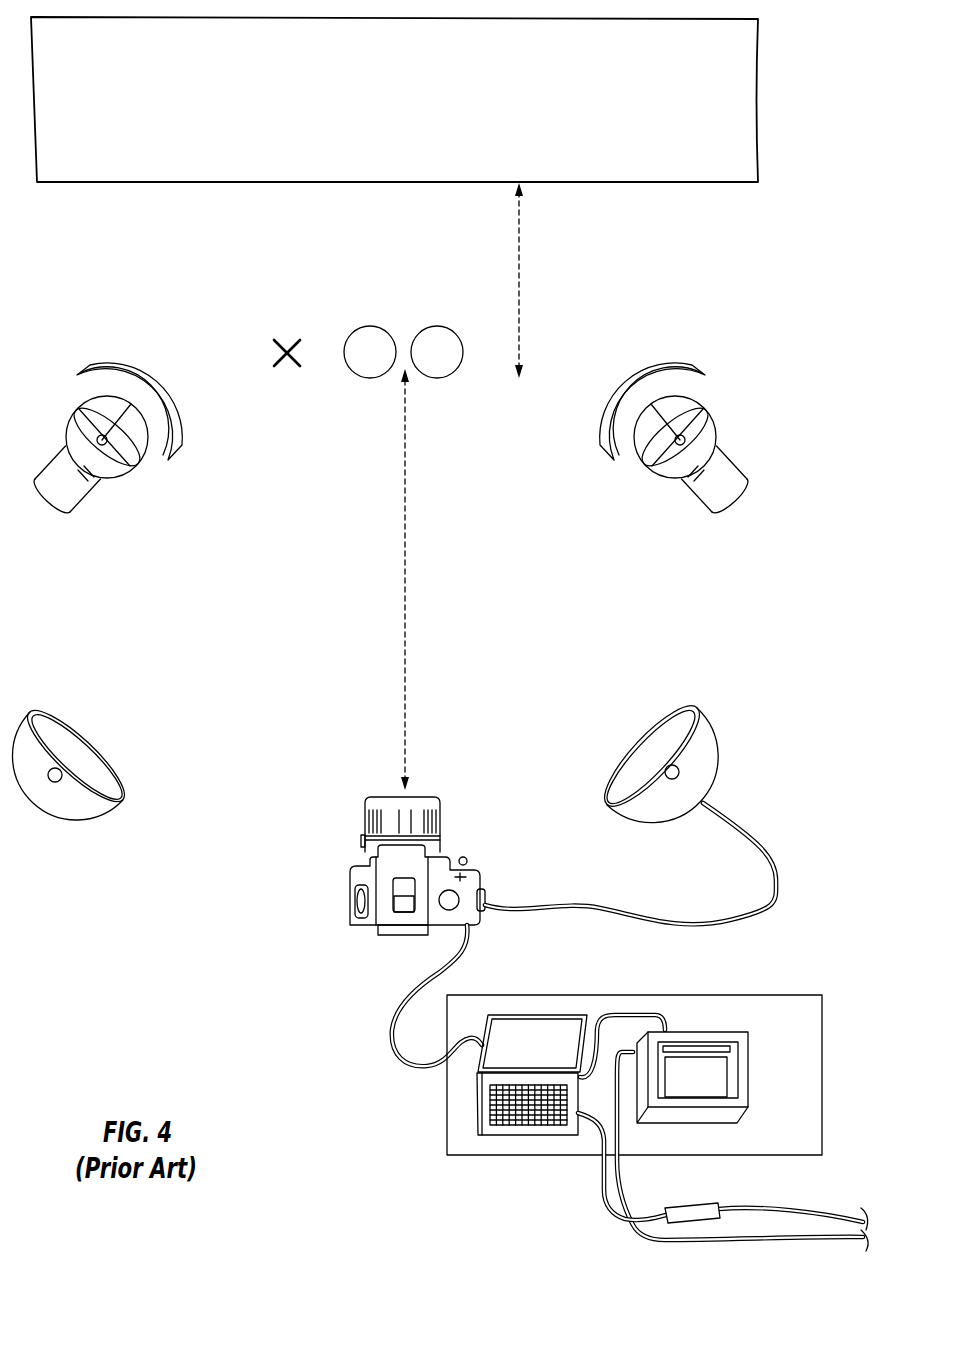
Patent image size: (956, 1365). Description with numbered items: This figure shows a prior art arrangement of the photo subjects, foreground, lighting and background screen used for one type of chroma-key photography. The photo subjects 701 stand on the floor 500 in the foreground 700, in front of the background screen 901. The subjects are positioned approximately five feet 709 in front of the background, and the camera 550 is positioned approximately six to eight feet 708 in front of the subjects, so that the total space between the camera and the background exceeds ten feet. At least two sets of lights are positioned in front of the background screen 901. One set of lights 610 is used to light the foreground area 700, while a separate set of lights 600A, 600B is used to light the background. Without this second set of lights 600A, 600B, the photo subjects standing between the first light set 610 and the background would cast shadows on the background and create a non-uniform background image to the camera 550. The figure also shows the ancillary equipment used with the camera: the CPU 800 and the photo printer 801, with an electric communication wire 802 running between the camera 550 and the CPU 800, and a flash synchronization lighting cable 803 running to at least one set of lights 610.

The floor 500 is at (218, 256).
The background screen 901 is at (705, 183).
The distance of approximately five feet 709 is at (520, 290).
The foreground 700 is at (276, 357).
The photo subjects 701 is at (367, 396).
The distance of approximately six to eight feet 708 is at (407, 656).
The background light 600A is at (78, 493).
The background light 600B is at (704, 493).
The foreground lights 610 is at (58, 818).
The camera 550 is at (350, 887).
The flash synchronization lighting cable 803 is at (765, 892).
The electric communication wire 802 is at (385, 1040).
The CPU 800 is at (548, 1013).
The photo printer 801 is at (735, 1035).